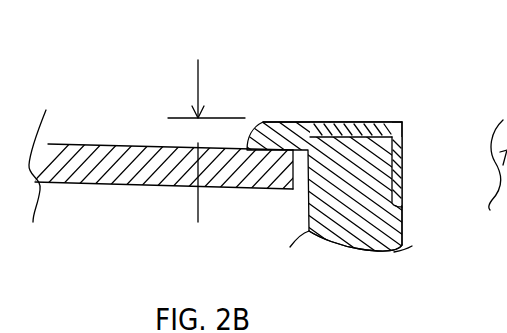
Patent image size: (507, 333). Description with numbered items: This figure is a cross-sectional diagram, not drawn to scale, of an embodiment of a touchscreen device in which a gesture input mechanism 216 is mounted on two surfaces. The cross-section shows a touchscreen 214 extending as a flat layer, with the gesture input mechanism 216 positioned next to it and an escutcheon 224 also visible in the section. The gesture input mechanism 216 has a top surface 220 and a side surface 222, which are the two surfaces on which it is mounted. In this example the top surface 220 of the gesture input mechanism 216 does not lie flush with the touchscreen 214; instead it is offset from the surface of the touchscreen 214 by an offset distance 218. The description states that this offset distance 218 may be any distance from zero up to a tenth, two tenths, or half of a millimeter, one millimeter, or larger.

The touchscreen 214 is at (178, 70).
The gesture input mechanism 216 is at (357, 122).
The offset distance 218 is at (235, 133).
The top surface 220 is at (333, 122).
The side surface 222 is at (404, 176).
The escutcheon 224 is at (350, 236).